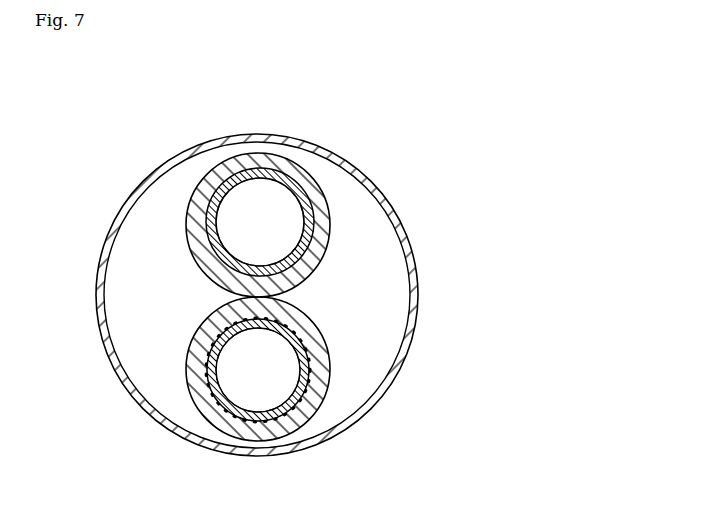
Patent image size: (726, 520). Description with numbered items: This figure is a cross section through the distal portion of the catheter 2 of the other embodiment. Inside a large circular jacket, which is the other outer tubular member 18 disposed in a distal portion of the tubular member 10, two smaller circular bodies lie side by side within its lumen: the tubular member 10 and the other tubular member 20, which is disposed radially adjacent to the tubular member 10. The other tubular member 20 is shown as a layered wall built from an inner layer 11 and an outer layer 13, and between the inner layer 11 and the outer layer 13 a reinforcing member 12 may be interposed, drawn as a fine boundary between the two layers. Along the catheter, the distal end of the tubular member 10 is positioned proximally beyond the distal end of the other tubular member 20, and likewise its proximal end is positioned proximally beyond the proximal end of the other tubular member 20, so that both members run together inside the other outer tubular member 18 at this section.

The catheter 2 is at (237, 286).
The tubular member 10 is at (195, 441).
The inner layer 11 is at (214, 244).
The reinforcing member 12 is at (206, 365).
The outer layer 13 is at (194, 193).
The other outer tubular member 18 is at (266, 321).
The other tubular member 20 is at (220, 165).